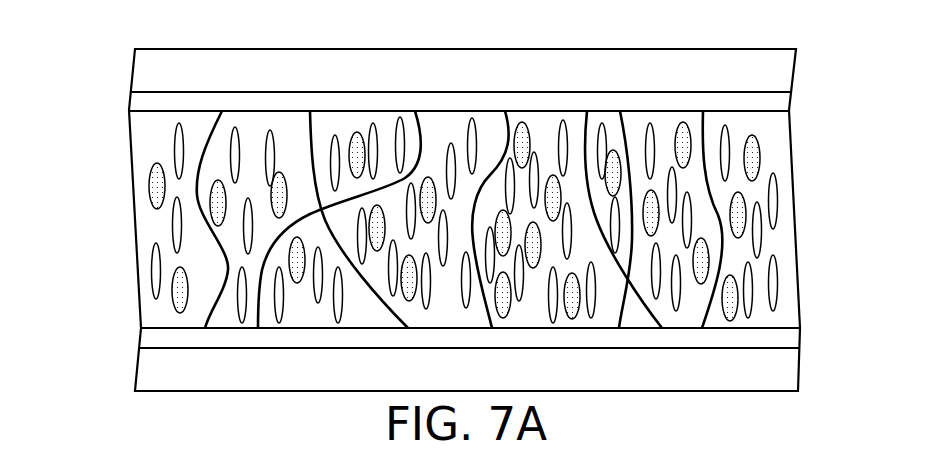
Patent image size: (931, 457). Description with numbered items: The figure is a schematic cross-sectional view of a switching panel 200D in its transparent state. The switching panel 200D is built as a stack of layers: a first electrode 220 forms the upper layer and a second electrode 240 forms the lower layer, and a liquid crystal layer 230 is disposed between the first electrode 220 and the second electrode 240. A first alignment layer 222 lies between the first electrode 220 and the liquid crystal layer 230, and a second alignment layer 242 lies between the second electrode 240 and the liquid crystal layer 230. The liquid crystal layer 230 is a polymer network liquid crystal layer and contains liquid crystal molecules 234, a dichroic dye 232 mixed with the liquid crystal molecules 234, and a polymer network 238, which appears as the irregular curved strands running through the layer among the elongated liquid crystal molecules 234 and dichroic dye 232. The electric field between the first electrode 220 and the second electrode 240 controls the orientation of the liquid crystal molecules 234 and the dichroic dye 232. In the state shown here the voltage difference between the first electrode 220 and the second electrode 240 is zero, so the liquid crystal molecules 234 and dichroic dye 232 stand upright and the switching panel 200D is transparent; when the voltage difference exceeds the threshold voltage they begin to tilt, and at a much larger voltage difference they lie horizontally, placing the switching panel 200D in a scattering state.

The switching panel 200D is at (124, 46).
The first electrode 220 is at (775, 75).
The first alignment layer 222 is at (775, 103).
The liquid crystal layer 230 is at (111, 114).
The dichroic dye 232 is at (758, 151).
The liquid crystal molecules 234 is at (773, 200).
The polymer network 238 is at (732, 248).
The second alignment layer 242 is at (778, 338).
The second electrode 240 is at (778, 370).